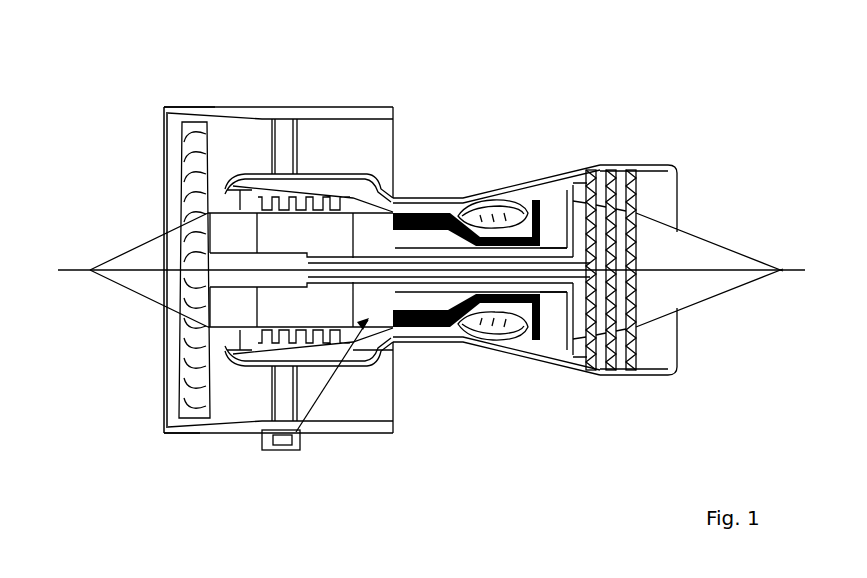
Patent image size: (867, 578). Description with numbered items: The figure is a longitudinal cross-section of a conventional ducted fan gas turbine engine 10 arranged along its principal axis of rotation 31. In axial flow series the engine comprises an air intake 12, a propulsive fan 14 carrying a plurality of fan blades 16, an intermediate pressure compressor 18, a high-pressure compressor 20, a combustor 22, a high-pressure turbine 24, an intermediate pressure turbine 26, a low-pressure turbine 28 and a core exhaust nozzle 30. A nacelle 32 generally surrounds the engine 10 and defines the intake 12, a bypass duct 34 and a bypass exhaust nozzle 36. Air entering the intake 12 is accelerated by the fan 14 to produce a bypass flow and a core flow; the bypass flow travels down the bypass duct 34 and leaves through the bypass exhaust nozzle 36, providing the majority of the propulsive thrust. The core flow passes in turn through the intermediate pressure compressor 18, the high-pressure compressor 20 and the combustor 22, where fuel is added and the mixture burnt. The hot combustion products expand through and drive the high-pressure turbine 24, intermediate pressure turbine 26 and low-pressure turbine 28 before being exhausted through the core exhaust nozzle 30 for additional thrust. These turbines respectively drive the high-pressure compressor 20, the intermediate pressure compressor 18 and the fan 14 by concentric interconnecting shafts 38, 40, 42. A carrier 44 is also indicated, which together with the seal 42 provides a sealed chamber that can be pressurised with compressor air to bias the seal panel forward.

The ducted fan gas turbine engine 10 is at (582, 118).
The air intake 12 is at (140, 383).
The propulsive fan 14 is at (187, 437).
The fan blades 16 is at (192, 356).
The intermediate pressure compressor 18 is at (280, 200).
The high-pressure compressor 20 is at (407, 333).
The combustor 22 is at (495, 348).
The high-pressure turbine 24 is at (535, 350).
The intermediate pressure turbine 26 is at (570, 370).
The low-pressure turbine 28 is at (622, 377).
The core exhaust nozzle 30 is at (688, 343).
The principal axis of rotation 31 is at (77, 270).
The nacelle 32 is at (263, 122).
The bypass duct 34 is at (347, 138).
The bypass exhaust nozzle 36 is at (395, 145).
The interconnecting shaft 38 is at (372, 275).
The interconnecting shaft 40 is at (458, 253).
The interconnecting shaft 42 is at (497, 230).
The carrier 44 is at (244, 290).